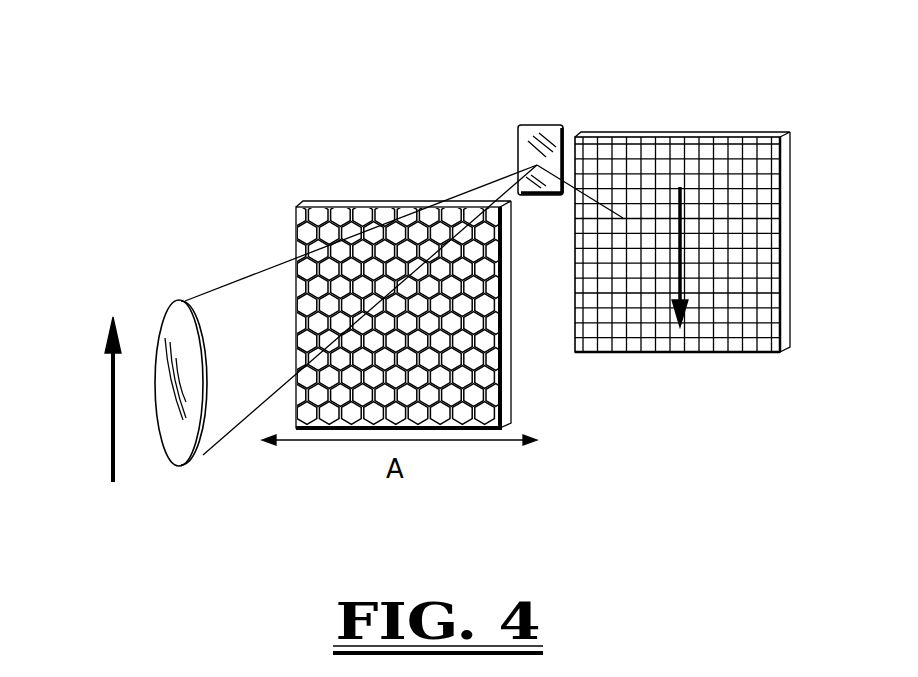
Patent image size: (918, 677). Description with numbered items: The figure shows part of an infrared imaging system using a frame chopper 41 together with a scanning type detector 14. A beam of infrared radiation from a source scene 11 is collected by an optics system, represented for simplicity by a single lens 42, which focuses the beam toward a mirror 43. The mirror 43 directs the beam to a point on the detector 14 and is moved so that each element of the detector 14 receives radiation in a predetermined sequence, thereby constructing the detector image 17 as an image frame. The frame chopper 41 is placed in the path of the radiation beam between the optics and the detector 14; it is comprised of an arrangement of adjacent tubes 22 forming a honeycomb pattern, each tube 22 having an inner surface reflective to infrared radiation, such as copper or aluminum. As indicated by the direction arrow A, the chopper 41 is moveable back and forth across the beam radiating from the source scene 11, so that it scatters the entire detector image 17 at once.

The source scene 11 is at (110, 400).
The detector 14 is at (703, 186).
The detector image 17 is at (683, 245).
The tubes 22 is at (463, 393).
The frame chopper 41 is at (451, 327).
The lens 42 is at (168, 322).
The mirror 43 is at (518, 140).